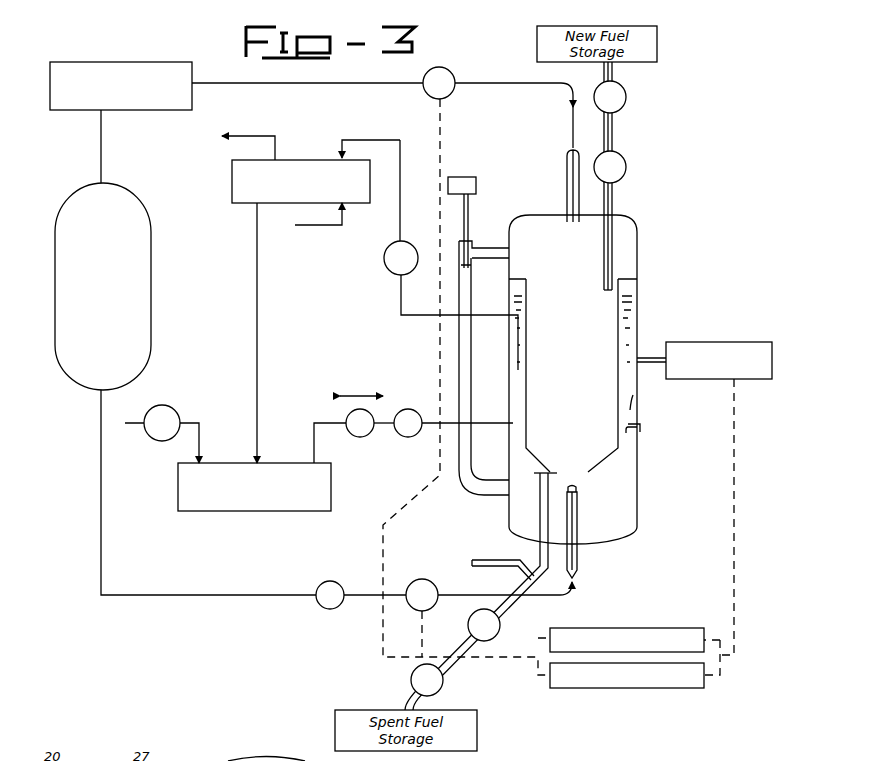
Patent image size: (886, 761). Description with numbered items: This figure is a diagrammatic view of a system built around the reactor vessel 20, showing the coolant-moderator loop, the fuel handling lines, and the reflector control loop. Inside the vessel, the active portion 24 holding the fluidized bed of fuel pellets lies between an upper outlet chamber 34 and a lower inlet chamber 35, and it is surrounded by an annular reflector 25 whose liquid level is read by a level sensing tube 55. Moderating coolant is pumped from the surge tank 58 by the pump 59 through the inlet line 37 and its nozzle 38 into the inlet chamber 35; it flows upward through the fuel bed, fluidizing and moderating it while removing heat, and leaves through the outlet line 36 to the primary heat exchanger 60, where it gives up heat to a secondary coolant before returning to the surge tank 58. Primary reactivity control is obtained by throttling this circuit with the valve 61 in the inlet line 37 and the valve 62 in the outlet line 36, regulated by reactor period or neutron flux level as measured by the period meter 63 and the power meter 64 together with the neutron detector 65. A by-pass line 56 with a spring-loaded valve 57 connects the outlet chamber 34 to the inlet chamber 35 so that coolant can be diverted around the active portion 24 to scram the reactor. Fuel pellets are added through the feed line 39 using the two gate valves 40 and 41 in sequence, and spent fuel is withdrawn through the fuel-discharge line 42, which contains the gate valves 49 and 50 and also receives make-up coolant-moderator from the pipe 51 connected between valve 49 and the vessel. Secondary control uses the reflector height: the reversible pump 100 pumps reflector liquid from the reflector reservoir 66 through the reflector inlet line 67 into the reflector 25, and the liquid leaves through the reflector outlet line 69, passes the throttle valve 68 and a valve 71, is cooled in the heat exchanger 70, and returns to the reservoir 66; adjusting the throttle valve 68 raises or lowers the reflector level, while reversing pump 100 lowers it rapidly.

The reactor vessel 20 is at (658, 270).
The active portion 24 is at (573, 375).
The reflector 25 is at (631, 410).
The outlet chamber 34 is at (573, 260).
The inlet chamber 35 is at (603, 513).
The outlet line 36 is at (567, 182).
The inlet line 37 is at (578, 560).
The nozzle 38 is at (577, 490).
The feed line 39 is at (613, 212).
The gate valve 40 is at (626, 97).
The gate valve 41 is at (626, 168).
The fuel-discharge line 42 is at (522, 590).
The gate valve 49 is at (500, 624).
The gate valve 50 is at (411, 680).
The pipe 51 is at (490, 560).
The level sensing tube 55 is at (642, 426).
The by-pass line 56 is at (471, 380).
The spring-loaded valve 57 is at (468, 208).
The surge tank 58 is at (140, 275).
The pump 59 is at (322, 586).
The primary heat exchanger 60 is at (176, 72).
The valve 61 is at (438, 592).
The valve 62 is at (455, 83).
The period meter 63 is at (680, 628).
The power meter 64 is at (676, 688).
The neutron detector 65 is at (733, 343).
The reflector reservoir 66 is at (276, 464).
The reflector inlet line 67 is at (434, 436).
The throttle valve 68 is at (384, 258).
The reflector outlet line 69 is at (401, 300).
The heat exchanger 70 is at (232, 168).
The valve 71 is at (190, 423).
The reversible pump 100 is at (346, 418).